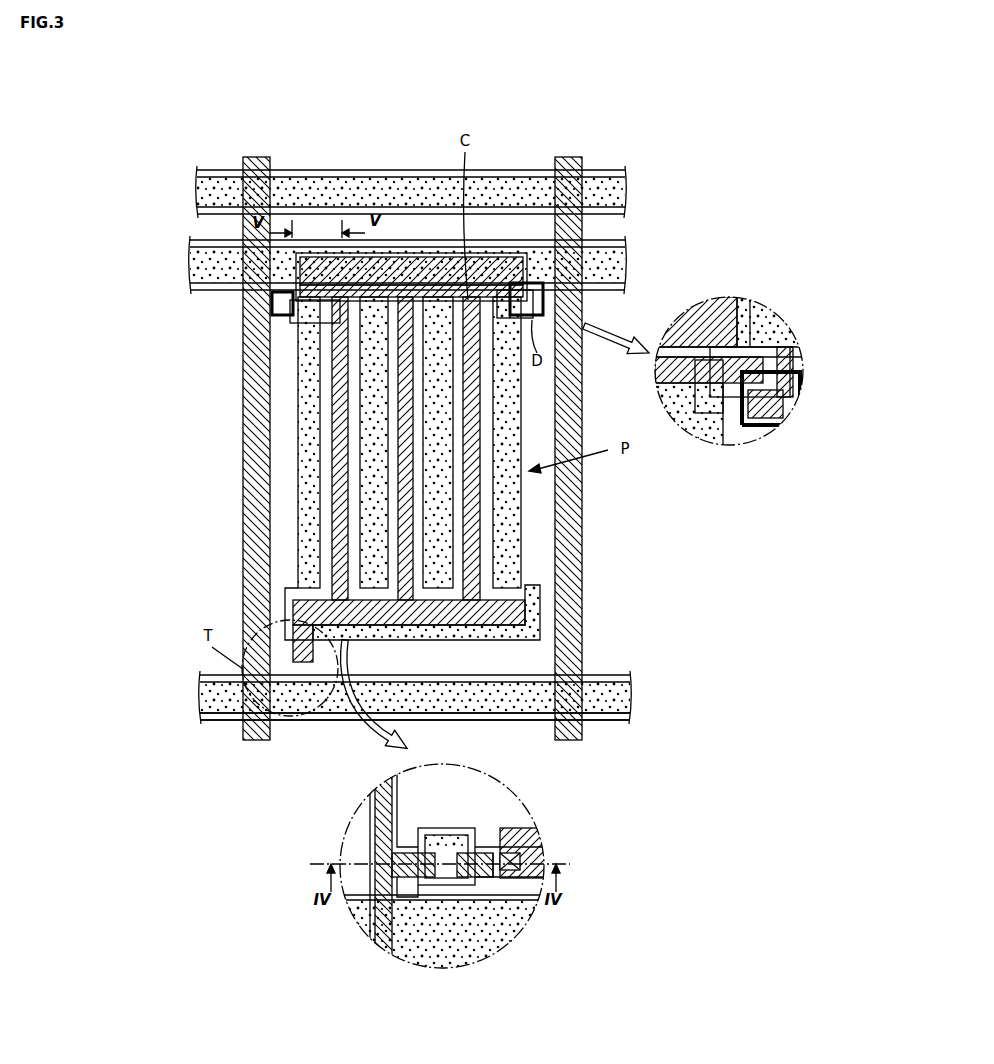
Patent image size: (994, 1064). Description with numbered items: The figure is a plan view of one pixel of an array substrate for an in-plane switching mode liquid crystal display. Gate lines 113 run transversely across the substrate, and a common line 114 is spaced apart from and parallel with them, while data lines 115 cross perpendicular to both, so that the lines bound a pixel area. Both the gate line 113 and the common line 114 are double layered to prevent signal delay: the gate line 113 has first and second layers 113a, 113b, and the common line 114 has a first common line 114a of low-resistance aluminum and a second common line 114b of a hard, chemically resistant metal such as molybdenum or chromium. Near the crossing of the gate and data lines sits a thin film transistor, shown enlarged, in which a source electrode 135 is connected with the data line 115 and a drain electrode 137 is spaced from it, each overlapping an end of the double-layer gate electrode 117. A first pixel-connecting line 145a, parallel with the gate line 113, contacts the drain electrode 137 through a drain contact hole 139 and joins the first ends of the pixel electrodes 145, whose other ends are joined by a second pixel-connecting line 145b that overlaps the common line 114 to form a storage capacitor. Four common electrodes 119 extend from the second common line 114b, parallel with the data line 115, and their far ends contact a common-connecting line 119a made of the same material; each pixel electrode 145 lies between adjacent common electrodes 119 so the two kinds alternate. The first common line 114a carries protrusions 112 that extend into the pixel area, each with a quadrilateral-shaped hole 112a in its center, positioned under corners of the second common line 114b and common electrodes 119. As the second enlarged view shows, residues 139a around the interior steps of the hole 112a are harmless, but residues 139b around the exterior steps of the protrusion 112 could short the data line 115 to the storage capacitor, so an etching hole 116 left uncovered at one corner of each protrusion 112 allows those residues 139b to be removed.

The protrusion 112 is at (263, 322).
The quadrilateral-shaped hole 112a is at (762, 440).
The gate line 113 is at (185, 195).
The first layer of gate line 113a is at (630, 718).
The second layer of gate line 113b is at (601, 720).
The common line 114 is at (648, 268).
The first common line 114a is at (288, 300).
The second common line 114b is at (216, 296).
The data line 115 is at (243, 441).
The etching hole 116 is at (286, 320).
The gate electrode 117 is at (448, 835).
The common electrode 119 is at (521, 437).
The common-connecting line 119a is at (533, 634).
The source electrode 135 is at (408, 856).
The drain electrode 137 is at (497, 876).
The drain contact hole 139 is at (516, 865).
The residues around interior step portions 139a is at (803, 368).
The residues around exterior step portions 139b is at (792, 406).
The pixel electrode 145 is at (478, 546).
The first pixel-connecting line 145a is at (522, 611).
The second pixel-connecting line 145b is at (430, 257).